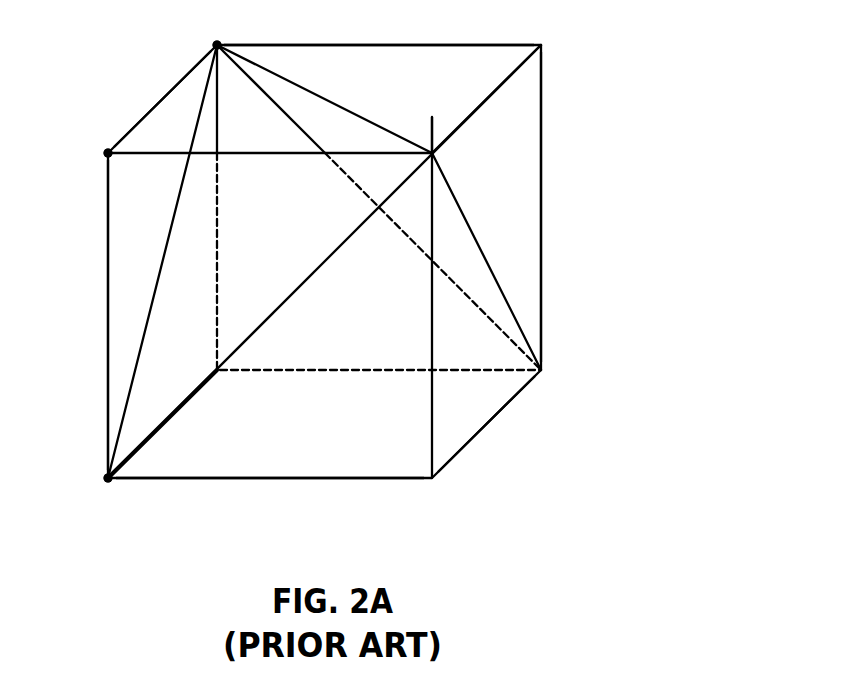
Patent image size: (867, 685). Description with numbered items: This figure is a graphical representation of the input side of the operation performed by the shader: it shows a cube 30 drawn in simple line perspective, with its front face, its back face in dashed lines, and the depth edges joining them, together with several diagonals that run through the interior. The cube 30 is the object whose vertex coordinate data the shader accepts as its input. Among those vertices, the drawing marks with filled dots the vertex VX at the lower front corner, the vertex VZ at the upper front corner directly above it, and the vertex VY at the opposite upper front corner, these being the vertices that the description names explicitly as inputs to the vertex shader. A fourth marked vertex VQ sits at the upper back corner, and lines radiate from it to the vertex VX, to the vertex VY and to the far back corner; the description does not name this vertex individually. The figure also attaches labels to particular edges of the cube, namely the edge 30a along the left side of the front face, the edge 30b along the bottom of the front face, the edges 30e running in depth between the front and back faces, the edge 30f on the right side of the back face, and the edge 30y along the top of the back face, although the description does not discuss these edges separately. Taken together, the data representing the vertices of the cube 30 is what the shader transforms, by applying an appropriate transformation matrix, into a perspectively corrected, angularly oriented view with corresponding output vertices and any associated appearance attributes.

The cube 30 is at (666, 98).
The left front edge 30a is at (108, 372).
The bottom front edge 30b is at (323, 480).
The depth edge 30e is at (158, 103).
The right back edge 30f is at (541, 212).
The top back edge 30y is at (433, 45).
The vertex Q VQ is at (217, 45).
The vertex Vz VZ is at (108, 153).
The vertex Vy VY is at (437, 122).
The vertex Vx VX is at (108, 480).